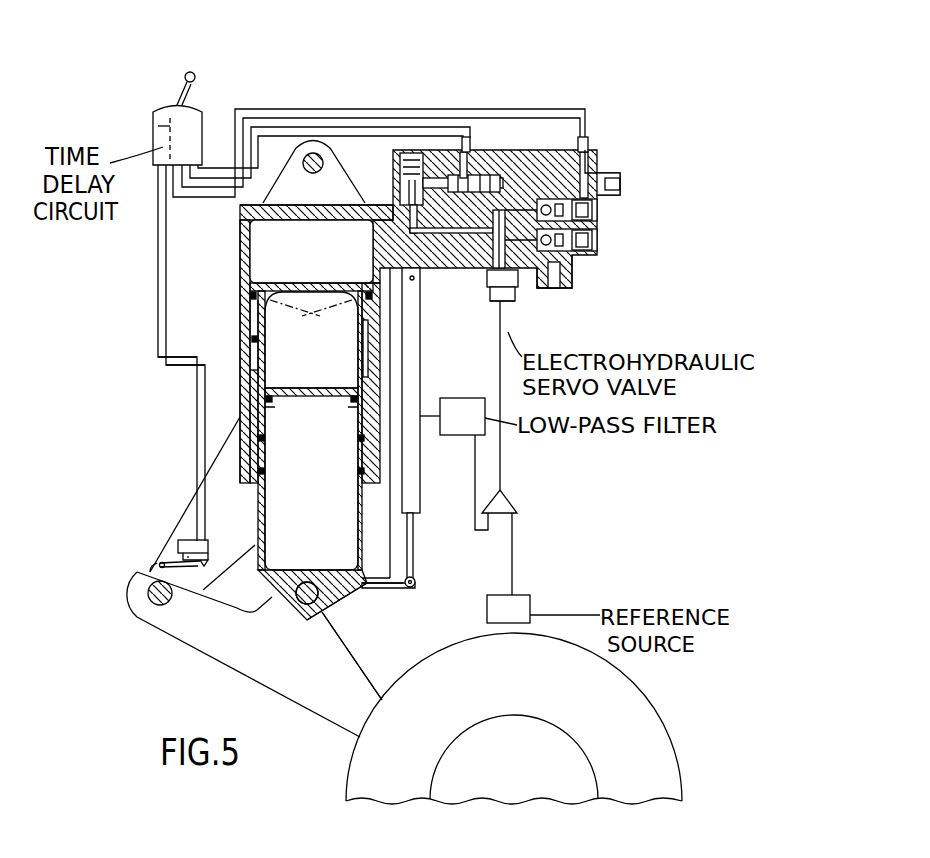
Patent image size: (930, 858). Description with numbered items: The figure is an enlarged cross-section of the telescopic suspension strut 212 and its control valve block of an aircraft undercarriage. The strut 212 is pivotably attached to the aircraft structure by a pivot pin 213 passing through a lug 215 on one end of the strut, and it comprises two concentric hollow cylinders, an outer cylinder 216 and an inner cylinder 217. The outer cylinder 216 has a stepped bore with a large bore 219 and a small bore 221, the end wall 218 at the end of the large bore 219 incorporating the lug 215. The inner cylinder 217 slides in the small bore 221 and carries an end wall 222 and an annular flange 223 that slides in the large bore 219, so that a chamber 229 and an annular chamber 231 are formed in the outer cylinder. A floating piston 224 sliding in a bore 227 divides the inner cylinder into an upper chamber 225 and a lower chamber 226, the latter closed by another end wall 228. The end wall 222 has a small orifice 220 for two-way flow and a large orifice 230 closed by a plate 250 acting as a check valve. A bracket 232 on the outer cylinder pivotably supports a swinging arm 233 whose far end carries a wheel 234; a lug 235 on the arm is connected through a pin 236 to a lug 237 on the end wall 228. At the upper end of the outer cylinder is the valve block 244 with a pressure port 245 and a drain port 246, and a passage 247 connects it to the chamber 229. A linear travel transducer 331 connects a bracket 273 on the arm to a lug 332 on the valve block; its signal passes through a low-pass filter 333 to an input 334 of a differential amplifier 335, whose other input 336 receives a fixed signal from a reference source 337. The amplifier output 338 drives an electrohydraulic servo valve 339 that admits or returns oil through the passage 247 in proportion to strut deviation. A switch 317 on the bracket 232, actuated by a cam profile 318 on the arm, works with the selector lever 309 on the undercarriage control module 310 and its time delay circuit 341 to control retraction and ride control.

The selector lever 309 is at (186, 72).
The undercarriage control system module 310 is at (183, 120).
The time delay circuit 341 is at (158, 125).
The lug 215 is at (295, 172).
The pivot pin 213 is at (318, 156).
The end wall 218 is at (377, 203).
The passage 247 is at (393, 150).
The valve block 244 is at (605, 162).
The drain port 246 is at (620, 187).
The port 245 is at (560, 288).
The large bore 219 is at (255, 218).
The small orifice 220 is at (240, 242).
The outer cylinder 216 is at (246, 267).
The chamber 229 is at (311, 251).
The end wall 222 is at (290, 278).
The large orifice 230 is at (306, 296).
The telescopic suspension strut 212 is at (238, 310).
The annular flange 223 is at (246, 340).
The plate 250 is at (311, 340).
The upper chamber 225 is at (311, 365).
The annular chamber 231 is at (247, 352).
The small bore 221 is at (268, 420).
The bracket 232 is at (228, 465).
The floating piston 224 is at (312, 397).
The inner cylinder 217 is at (260, 507).
The switch 317 is at (180, 542).
The cam profile 318 is at (152, 570).
The lower chamber 226 is at (311, 488).
The end wall 228 is at (305, 580).
The bore 227 is at (362, 545).
The bracket 273 is at (392, 590).
The lug 237 is at (280, 603).
The pin 236 is at (307, 627).
The lug 235 is at (310, 630).
The swinging arm 233 is at (327, 677).
The wheel 234 is at (655, 750).
The lug 332 is at (415, 280).
The linear travel transducer 331 is at (420, 322).
The electrohydraulic servo valve 339 is at (508, 301).
The low-pass filter 333 is at (447, 400).
The amplifier output 338 is at (500, 488).
The differential amplifier 335 is at (512, 508).
The input 334 is at (479, 502).
The input 336 is at (515, 520).
The reference source 337 is at (530, 600).